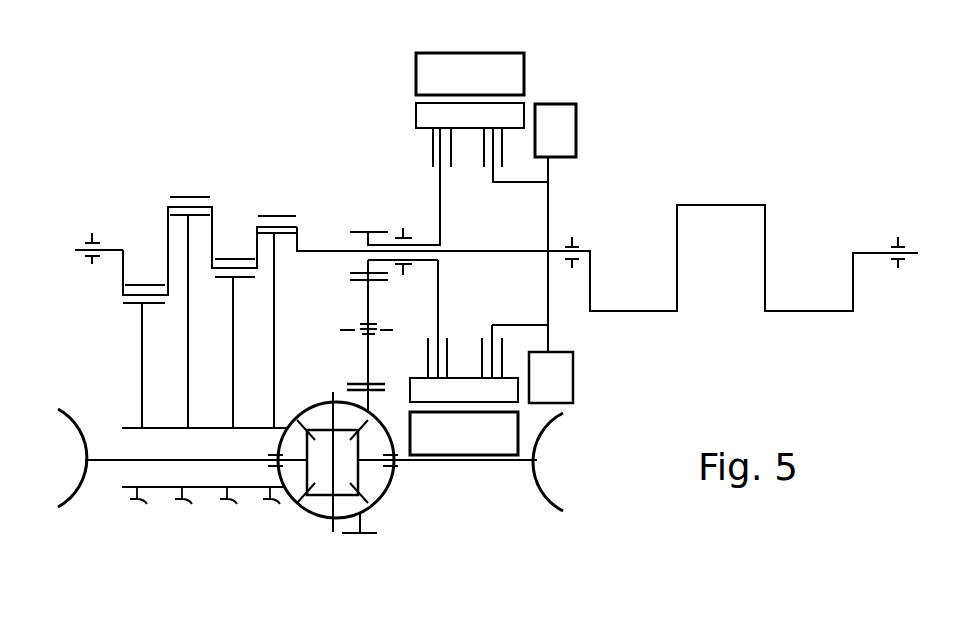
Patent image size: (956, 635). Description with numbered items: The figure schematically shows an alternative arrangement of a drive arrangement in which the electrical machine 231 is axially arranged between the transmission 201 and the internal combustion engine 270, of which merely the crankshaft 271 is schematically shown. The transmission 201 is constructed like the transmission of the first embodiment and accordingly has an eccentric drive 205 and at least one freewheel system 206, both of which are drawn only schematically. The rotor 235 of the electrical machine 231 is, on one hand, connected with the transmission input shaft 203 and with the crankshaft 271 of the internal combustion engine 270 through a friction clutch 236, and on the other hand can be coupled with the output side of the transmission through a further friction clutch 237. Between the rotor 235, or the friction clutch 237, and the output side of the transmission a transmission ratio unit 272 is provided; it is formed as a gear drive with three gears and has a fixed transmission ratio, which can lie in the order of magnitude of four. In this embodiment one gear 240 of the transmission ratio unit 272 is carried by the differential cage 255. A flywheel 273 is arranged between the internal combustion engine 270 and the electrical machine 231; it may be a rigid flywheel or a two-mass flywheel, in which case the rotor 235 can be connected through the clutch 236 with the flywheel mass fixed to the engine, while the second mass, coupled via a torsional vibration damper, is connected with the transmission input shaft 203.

The transmission 201 is at (223, 180).
The transmission input shaft 203 is at (335, 250).
The eccentric drive 205 is at (287, 208).
The freewheel system 206 is at (126, 418).
The electrical machine 231 is at (408, 108).
The rotor 235 is at (520, 108).
The friction clutch 236 is at (505, 163).
The friction clutch 237 is at (430, 147).
The gear 240 is at (347, 537).
The differential cage 255 is at (303, 510).
The internal combustion engine 270 is at (710, 197).
The crankshaft 271 is at (763, 203).
The transmission ratio unit 272 is at (352, 380).
The flywheel 273 is at (563, 378).